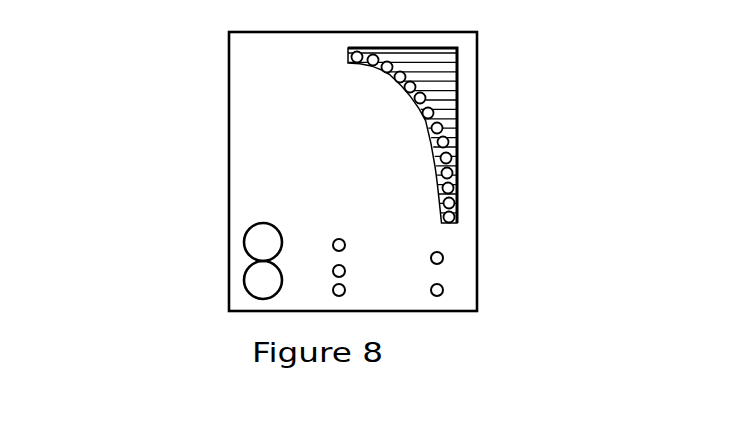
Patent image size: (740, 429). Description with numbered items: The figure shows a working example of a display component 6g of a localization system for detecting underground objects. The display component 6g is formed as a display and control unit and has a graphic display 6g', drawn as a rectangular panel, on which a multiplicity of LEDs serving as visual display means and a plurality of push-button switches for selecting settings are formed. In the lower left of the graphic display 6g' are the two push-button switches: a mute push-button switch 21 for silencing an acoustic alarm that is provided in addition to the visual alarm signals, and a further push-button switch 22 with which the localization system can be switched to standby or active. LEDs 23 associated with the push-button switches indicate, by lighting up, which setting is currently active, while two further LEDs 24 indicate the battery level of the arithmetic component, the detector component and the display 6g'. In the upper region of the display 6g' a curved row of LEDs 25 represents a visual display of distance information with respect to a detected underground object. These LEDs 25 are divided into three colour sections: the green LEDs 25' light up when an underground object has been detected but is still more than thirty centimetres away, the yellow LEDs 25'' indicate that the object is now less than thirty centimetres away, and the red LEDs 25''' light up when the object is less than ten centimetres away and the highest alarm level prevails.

The display component 6g is at (266, 171).
The graphic display 6g' is at (306, 171).
The mute push-button switch 21 is at (255, 240).
The further push-button switch 22 is at (252, 278).
The LEDs 23 is at (368, 256).
The further LEDs 24 is at (463, 277).
The LEDs 25 is at (448, 135).
The green LEDs 25' is at (528, 191).
The yellow LEDs 25'' is at (537, 138).
The red LEDs 25''' is at (546, 81).